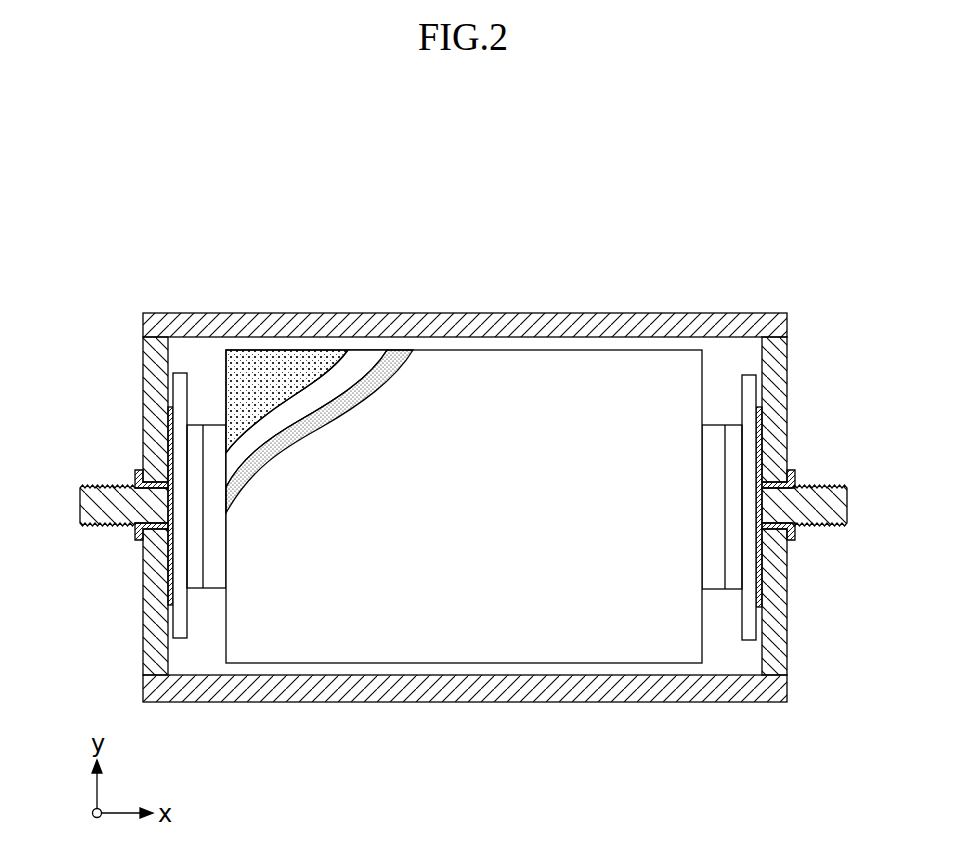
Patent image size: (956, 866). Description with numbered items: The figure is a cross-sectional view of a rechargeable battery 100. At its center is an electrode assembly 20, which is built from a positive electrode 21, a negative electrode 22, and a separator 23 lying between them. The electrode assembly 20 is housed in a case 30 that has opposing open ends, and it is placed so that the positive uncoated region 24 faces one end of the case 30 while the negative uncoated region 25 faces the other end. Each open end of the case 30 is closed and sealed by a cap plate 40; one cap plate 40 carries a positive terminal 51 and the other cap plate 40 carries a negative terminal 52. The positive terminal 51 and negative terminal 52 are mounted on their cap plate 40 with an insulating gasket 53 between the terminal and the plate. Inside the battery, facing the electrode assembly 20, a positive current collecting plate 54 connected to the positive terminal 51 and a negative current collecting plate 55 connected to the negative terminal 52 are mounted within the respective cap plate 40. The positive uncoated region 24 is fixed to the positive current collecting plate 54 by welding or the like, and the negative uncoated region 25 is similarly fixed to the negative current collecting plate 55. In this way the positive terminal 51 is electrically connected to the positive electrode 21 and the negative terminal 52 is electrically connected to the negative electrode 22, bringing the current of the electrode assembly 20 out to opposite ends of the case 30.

The rechargeable battery 100 is at (508, 117).
The electrode assembly 20 is at (464, 524).
The positive electrode 21 is at (263, 357).
The negative electrode 22 is at (397, 357).
The separator 23 is at (360, 362).
The positive uncoated region 24 is at (212, 578).
The negative uncoated region 25 is at (717, 578).
The case 30 is at (455, 685).
The cap plate 40 is at (153, 357).
The positive terminal 51 is at (92, 505).
The negative terminal 52 is at (835, 508).
The insulating gasket 53 is at (157, 478).
The positive current collecting plate 54 is at (178, 638).
The negative current collecting plate 55 is at (750, 634).